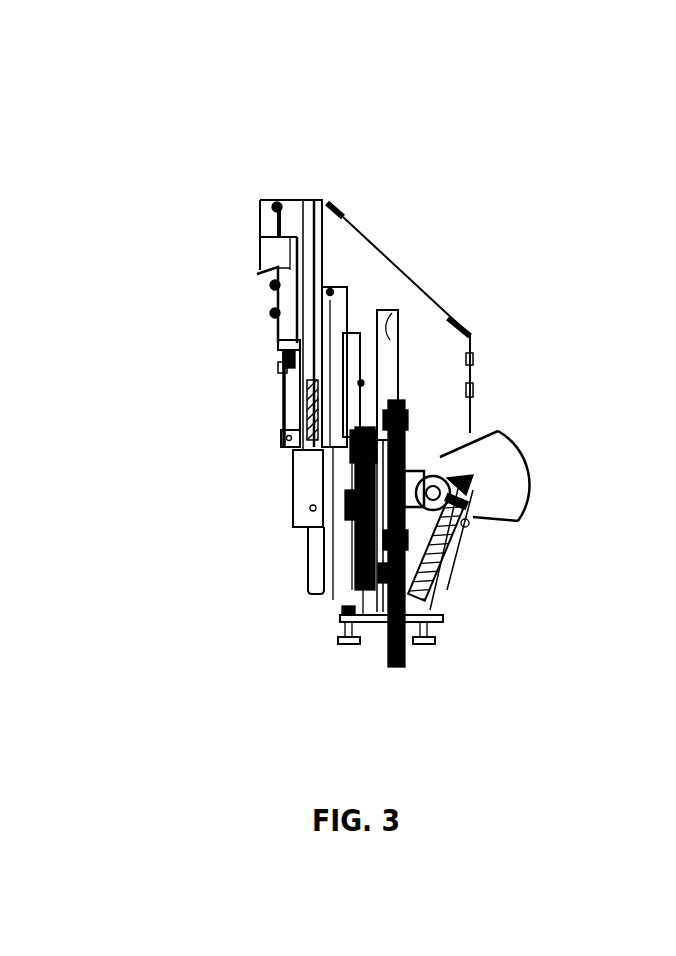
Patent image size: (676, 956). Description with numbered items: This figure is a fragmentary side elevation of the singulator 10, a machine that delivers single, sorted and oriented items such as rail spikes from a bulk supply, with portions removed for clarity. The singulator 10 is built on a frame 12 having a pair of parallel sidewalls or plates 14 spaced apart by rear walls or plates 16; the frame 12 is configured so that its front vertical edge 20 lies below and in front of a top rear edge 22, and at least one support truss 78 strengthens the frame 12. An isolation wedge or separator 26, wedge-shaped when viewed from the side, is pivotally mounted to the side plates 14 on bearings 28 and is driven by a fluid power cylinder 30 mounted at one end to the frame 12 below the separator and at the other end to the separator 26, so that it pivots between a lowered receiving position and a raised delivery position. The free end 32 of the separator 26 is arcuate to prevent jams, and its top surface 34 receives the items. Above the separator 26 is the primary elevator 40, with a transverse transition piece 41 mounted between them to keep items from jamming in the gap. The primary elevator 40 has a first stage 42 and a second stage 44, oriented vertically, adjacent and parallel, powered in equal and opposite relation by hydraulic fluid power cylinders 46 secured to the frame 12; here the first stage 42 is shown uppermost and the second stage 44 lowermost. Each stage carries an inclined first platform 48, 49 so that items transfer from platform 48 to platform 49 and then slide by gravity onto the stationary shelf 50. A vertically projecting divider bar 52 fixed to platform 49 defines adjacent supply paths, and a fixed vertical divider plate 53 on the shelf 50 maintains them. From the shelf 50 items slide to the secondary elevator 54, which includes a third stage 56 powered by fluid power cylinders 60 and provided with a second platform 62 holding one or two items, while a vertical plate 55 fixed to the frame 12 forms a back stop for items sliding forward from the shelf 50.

The singulator 10 is at (402, 110).
The frame 12 is at (327, 200).
The sidewalls or plates 14 is at (453, 263).
The rear walls or plates 16 is at (277, 280).
The front vertical edge 20 is at (472, 352).
The top rear edge 22 is at (285, 200).
The isolation wedge or separator 26 is at (533, 481).
The bearings 28 is at (473, 525).
The fluid power cylinder 30 is at (462, 582).
The free end 32 is at (526, 490).
The top surface 34 is at (428, 474).
The primary elevator 40 is at (523, 391).
The transverse transition piece 41 is at (417, 473).
The first stage 42 is at (444, 301).
The second stage 44 is at (355, 307).
The fluid power cylinders 46 is at (360, 560).
The first platform 48 is at (385, 402).
The first platform 49 is at (300, 455).
The stationary shelf 50 is at (283, 332).
The divider bar 52 is at (350, 523).
The vertical divider plate 53 is at (260, 250).
The secondary elevator 54 is at (354, 200).
The vertical plate 55 is at (345, 280).
The third stage 56 is at (280, 368).
The fluid power cylinders 60 is at (345, 440).
The second platform 62 is at (277, 307).
The support truss 78 is at (475, 403).